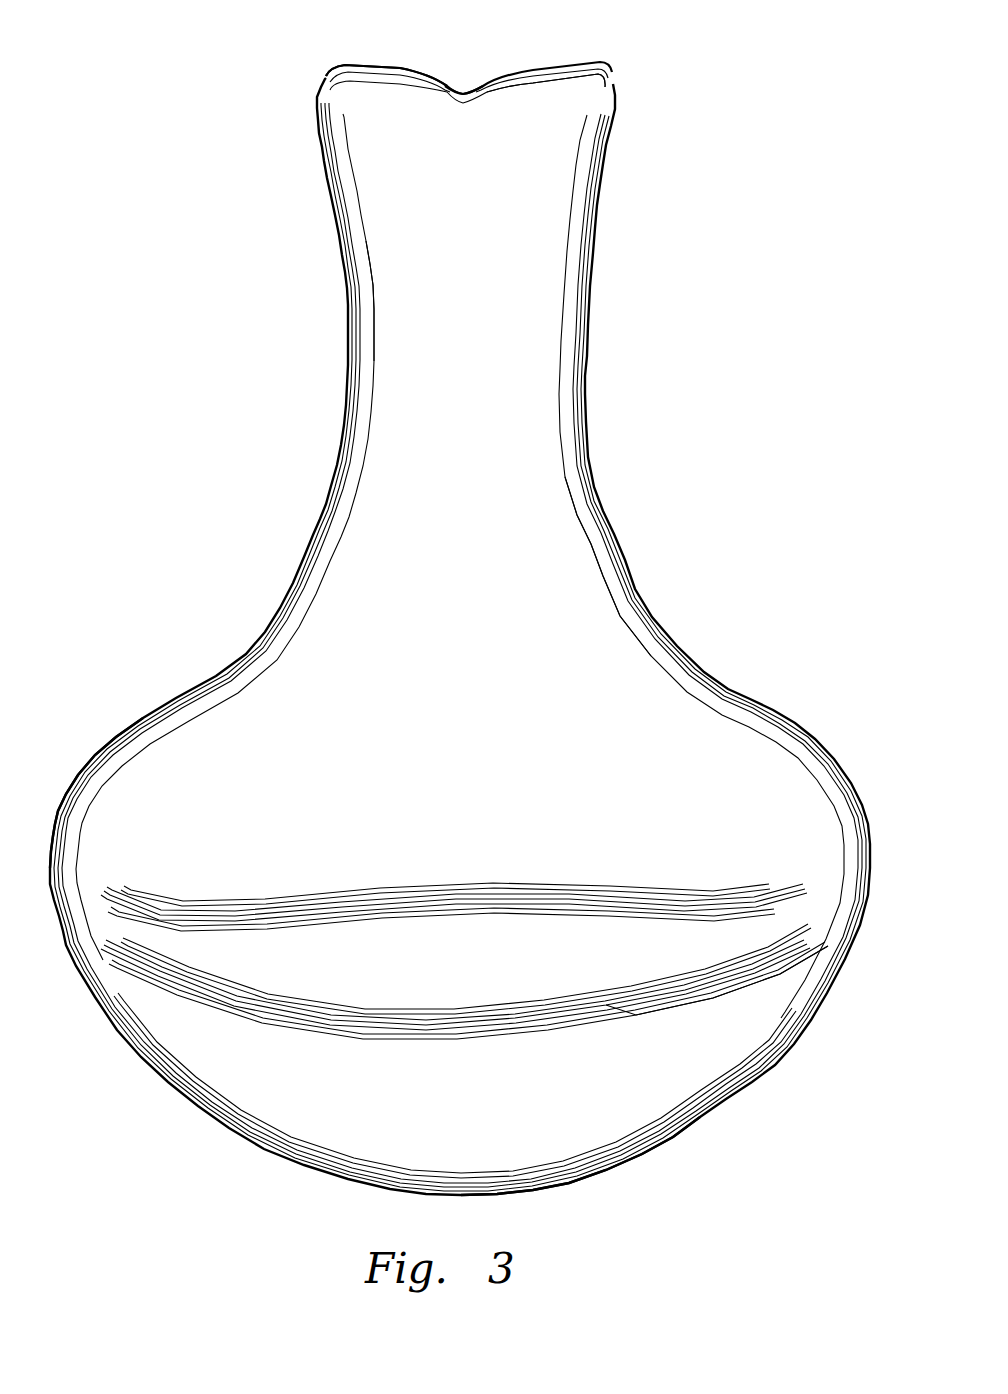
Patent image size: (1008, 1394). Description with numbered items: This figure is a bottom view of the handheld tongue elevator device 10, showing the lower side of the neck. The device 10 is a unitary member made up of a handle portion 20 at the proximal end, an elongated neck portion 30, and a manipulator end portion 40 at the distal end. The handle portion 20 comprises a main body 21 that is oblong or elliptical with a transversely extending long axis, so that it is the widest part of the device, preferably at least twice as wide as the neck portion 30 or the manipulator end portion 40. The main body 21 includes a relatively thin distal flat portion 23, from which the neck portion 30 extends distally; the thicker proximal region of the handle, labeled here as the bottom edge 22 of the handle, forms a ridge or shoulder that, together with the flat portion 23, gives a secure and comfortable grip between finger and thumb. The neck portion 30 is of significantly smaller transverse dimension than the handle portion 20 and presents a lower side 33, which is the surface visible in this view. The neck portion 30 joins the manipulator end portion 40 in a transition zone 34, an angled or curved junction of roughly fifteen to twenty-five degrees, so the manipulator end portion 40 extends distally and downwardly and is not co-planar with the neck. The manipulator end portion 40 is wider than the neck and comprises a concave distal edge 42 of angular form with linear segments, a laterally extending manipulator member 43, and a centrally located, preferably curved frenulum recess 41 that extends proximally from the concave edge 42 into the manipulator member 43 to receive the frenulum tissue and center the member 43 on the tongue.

The tongue elevator device 10 is at (718, 293).
The handle portion 20 is at (168, 1112).
The main body 21 is at (86, 762).
The bottom of body 22 is at (658, 1148).
The distal flat portion 23 is at (665, 815).
The neck portion 30 is at (288, 428).
The lower side 33 is at (541, 636).
The transition zone 34 is at (396, 310).
The manipulator end portion 40 is at (668, 82).
The frenulum recess 41 is at (463, 92).
The concave distal edge 42 is at (397, 67).
The manipulator member 43 is at (553, 117).